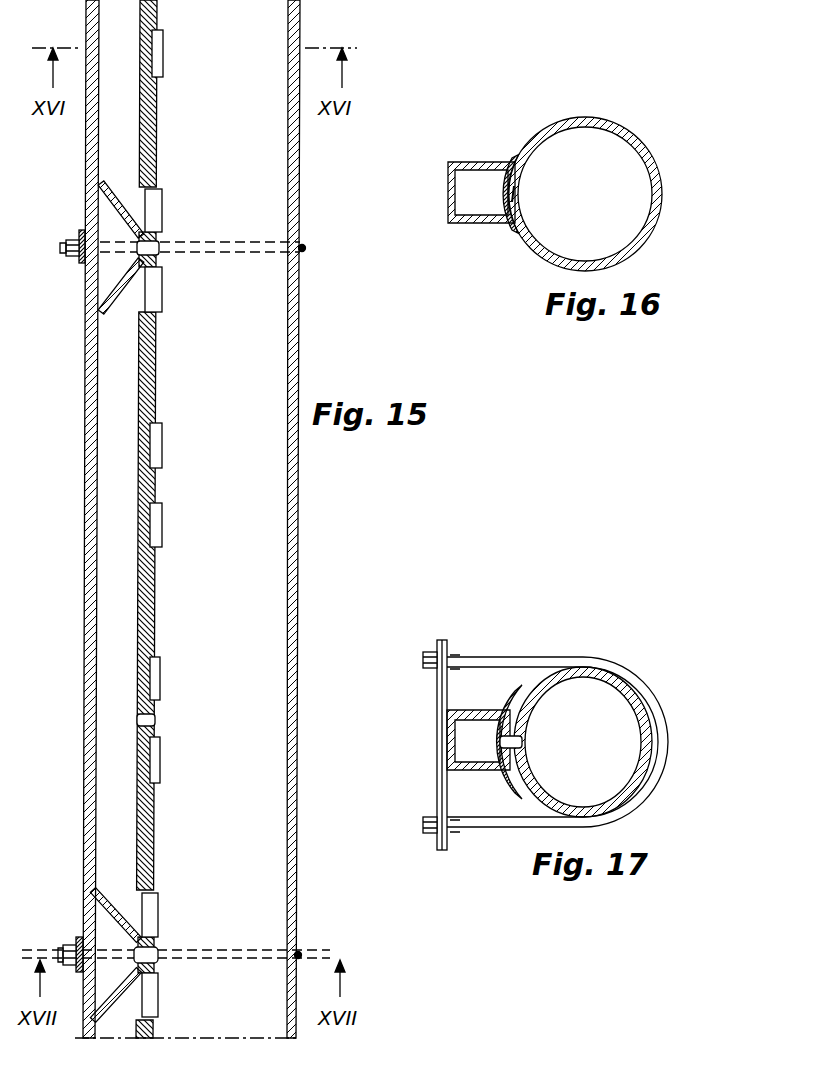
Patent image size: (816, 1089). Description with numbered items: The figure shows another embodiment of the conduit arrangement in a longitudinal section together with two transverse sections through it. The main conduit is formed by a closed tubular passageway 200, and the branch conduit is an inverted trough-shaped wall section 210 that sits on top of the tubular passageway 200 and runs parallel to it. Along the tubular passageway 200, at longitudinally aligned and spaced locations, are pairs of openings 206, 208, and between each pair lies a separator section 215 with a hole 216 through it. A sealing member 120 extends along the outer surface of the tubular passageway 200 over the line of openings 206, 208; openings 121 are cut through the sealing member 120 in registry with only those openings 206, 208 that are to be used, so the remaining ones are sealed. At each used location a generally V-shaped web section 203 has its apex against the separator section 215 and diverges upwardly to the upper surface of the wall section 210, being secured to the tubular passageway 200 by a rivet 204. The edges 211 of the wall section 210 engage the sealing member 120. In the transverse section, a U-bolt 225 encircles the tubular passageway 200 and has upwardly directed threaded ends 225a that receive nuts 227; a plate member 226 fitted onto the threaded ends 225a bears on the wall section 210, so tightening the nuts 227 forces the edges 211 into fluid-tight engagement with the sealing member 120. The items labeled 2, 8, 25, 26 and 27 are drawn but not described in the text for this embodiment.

In FIG. 16, the square tube 2 is at (481, 175).
In FIG. 16, the rivet 8 is at (514, 198).
In FIG. 15, the pivot pin 25 is at (305, 248).
In FIG. 15, the bolt 26 is at (82, 232).
In FIG. 15, the nut 27 is at (77, 257).
In FIG. 15, the sealing member 120 is at (140, 142).
In FIG. 16, the sealing member 120 is at (513, 150).
In FIG. 17, the sealing member 120 is at (514, 706).
In FIG. 15, the openings 121 is at (140, 312).
In FIG. 15, the tubular passageway 200 is at (299, 476).
In FIG. 17, the tubular passageway 200 is at (630, 668).
In FIG. 15, the V-shaped web section 203 is at (108, 283).
In FIG. 15, the rivet 204 is at (158, 956).
In FIG. 17, the rivet 204 is at (522, 742).
In FIG. 15, the opening 206 is at (162, 291).
In FIG. 15, the opening 208 is at (162, 206).
In FIG. 15, the wall section 210 is at (85, 690).
In FIG. 16, the wall section 210 is at (478, 225).
In FIG. 17, the wall section 210 is at (470, 772).
In FIG. 17, the edges 211 is at (512, 785).
In FIG. 15, the separator section 215 is at (160, 256).
In FIG. 15, the hole 216 is at (154, 487).
In FIG. 17, the U-bolt 225 is at (535, 662).
In FIG. 17, the threaded ends 225a is at (423, 660).
In FIG. 17, the plate member 226 is at (466, 643).
In FIG. 17, the nuts 227 is at (437, 655).